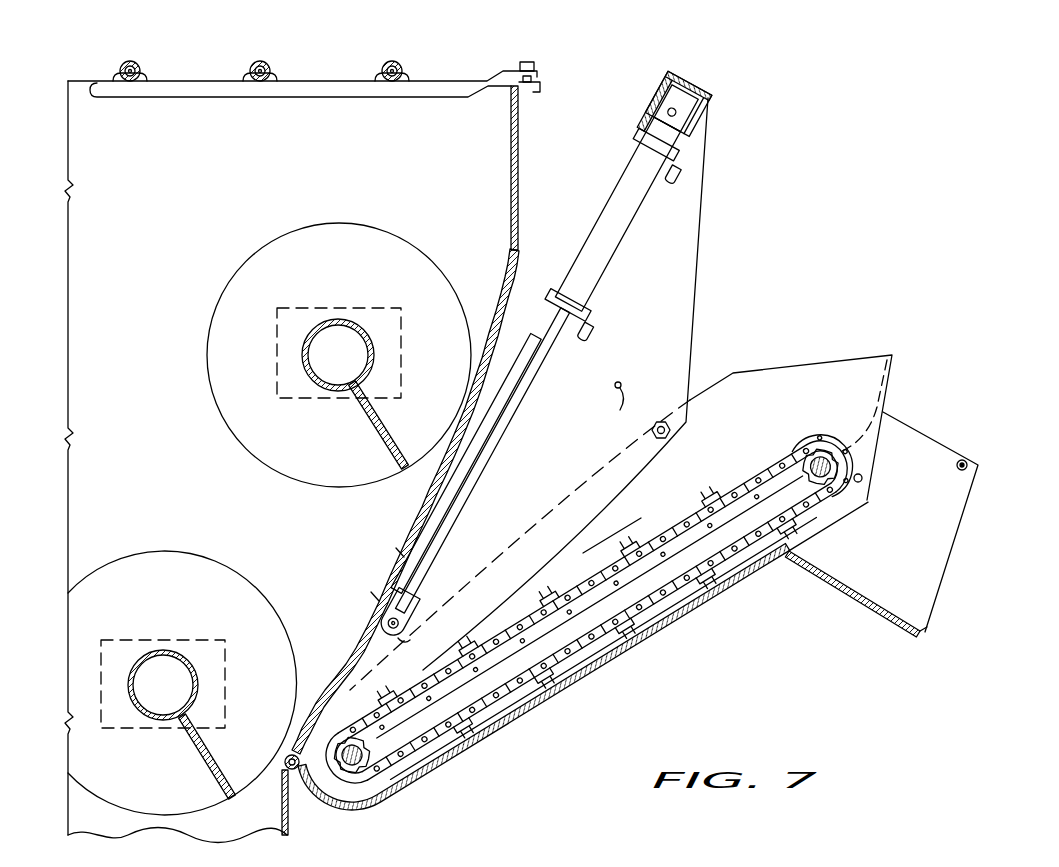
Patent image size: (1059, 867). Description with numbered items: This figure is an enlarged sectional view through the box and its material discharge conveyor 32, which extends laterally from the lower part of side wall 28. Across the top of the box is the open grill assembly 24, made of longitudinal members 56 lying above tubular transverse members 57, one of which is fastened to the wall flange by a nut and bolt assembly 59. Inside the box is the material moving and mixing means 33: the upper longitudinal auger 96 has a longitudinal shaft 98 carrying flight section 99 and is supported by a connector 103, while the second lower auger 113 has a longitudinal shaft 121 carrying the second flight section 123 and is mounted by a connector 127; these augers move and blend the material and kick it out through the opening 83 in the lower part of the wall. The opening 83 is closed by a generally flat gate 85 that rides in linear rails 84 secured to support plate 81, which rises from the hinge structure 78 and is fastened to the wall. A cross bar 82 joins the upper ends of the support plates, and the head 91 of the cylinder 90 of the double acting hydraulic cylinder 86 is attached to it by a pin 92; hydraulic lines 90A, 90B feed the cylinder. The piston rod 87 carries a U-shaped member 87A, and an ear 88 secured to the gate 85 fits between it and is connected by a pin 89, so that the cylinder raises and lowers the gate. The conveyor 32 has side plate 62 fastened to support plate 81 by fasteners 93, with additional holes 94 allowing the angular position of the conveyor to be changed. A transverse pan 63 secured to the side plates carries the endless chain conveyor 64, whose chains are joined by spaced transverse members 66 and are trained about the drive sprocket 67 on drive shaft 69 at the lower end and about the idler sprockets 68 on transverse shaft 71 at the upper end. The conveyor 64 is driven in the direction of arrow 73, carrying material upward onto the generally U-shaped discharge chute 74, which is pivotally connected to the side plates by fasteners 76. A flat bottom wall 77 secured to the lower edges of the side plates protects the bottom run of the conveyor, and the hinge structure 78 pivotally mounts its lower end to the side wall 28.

The open grill assembly 24 is at (302, 78).
The longitudinal members 56 is at (137, 61).
The transverse members 57 is at (325, 83).
The nut and bolt assembly 59 is at (531, 62).
The side wall 28 is at (519, 150).
The hinge structure 78 is at (289, 768).
The material moving and mixing means 33 is at (269, 487).
The upper longitudinal auger 96 is at (363, 224).
The flight section 99 is at (417, 252).
The connector 103 is at (299, 301).
The longitudinal shaft 98 is at (337, 319).
The second lower auger 113 is at (177, 553).
The second flight section 123 is at (222, 560).
The connector 127 is at (143, 633).
The longitudinal shaft 121 is at (192, 654).
The support plate 81 is at (703, 216).
The fasteners 93 is at (662, 420).
The additional holes 94 is at (607, 407).
The double acting hydraulic cylinder 86 is at (578, 353).
The cross bar 82 is at (674, 111).
The head 91 is at (676, 108).
The pin 92 is at (671, 112).
The cylinder 90 is at (617, 214).
The hydraulic line 90A is at (656, 156).
The hydraulic line 90B is at (568, 315).
The linear rails 84 is at (483, 460).
The piston rod 87 is at (466, 463).
The U-shaped member 87A is at (398, 613).
The pin 89 is at (393, 623).
The gate 85 is at (400, 553).
The opening 83 is at (375, 597).
The ear 88 is at (405, 637).
The material discharge conveyor 32 is at (631, 558).
The side plate 62 is at (853, 372).
The transverse shaft 71 is at (838, 455).
The fasteners 76 is at (862, 480).
The discharge chute 74 is at (871, 598).
The endless chain conveyor 64 is at (575, 593).
The transverse members 66 is at (709, 496).
The transverse pan 63 is at (603, 637).
The flat bottom wall 77 is at (581, 634).
The drive sprocket 67 is at (349, 759).
The idler sprockets 68 is at (826, 463).
The drive shaft 69 is at (330, 790).
The arrow 73 is at (612, 535).